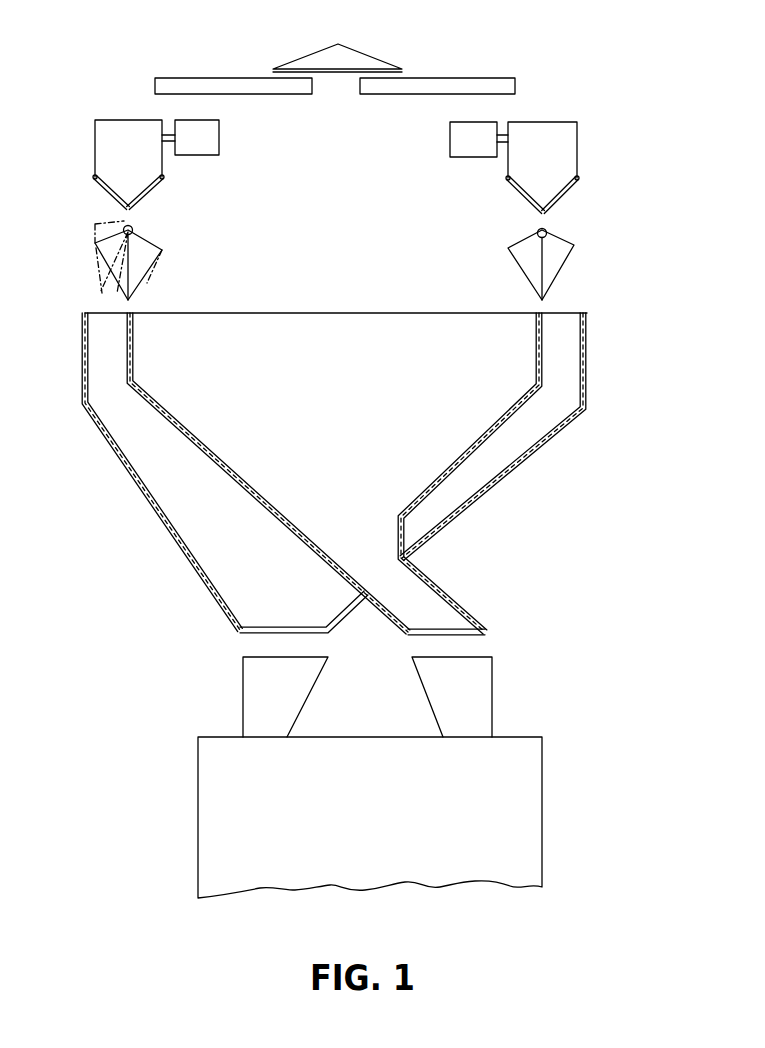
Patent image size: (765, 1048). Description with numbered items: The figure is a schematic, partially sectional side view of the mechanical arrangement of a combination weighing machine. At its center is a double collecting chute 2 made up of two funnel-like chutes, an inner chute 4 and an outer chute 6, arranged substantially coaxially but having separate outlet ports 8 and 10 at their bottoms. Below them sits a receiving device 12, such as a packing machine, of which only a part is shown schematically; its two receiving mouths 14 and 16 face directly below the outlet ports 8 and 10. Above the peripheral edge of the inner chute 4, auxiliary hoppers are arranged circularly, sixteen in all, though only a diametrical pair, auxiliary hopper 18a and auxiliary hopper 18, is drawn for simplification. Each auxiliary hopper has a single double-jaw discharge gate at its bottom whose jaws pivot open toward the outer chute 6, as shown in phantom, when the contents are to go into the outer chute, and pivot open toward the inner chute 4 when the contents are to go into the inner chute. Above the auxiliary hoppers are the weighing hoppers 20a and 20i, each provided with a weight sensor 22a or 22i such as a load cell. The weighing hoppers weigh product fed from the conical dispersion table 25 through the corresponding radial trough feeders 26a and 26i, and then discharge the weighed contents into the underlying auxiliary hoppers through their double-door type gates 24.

The double collecting chute 2 is at (340, 300).
The inner chute 4 is at (408, 328).
The outer chute 6 is at (172, 490).
The outlet port 8 is at (466, 634).
The outlet port 10 is at (250, 634).
The receiving device 12 is at (390, 808).
The receiving mouth 14 is at (492, 704).
The receiving mouth 16 is at (243, 697).
The auxiliary hopper 18 is at (511, 246).
The auxiliary hopper 18a is at (163, 245).
The weighing hopper 20a is at (101, 150).
The weighing hopper 20i is at (568, 156).
The weight sensor 22a is at (219, 140).
The weight sensor 22i is at (450, 143).
The double-door type gate 24 is at (100, 192).
The conical dispersion table 25 is at (356, 50).
The radial trough feeder 26a is at (216, 78).
The radial trough feeder 26i is at (475, 77).